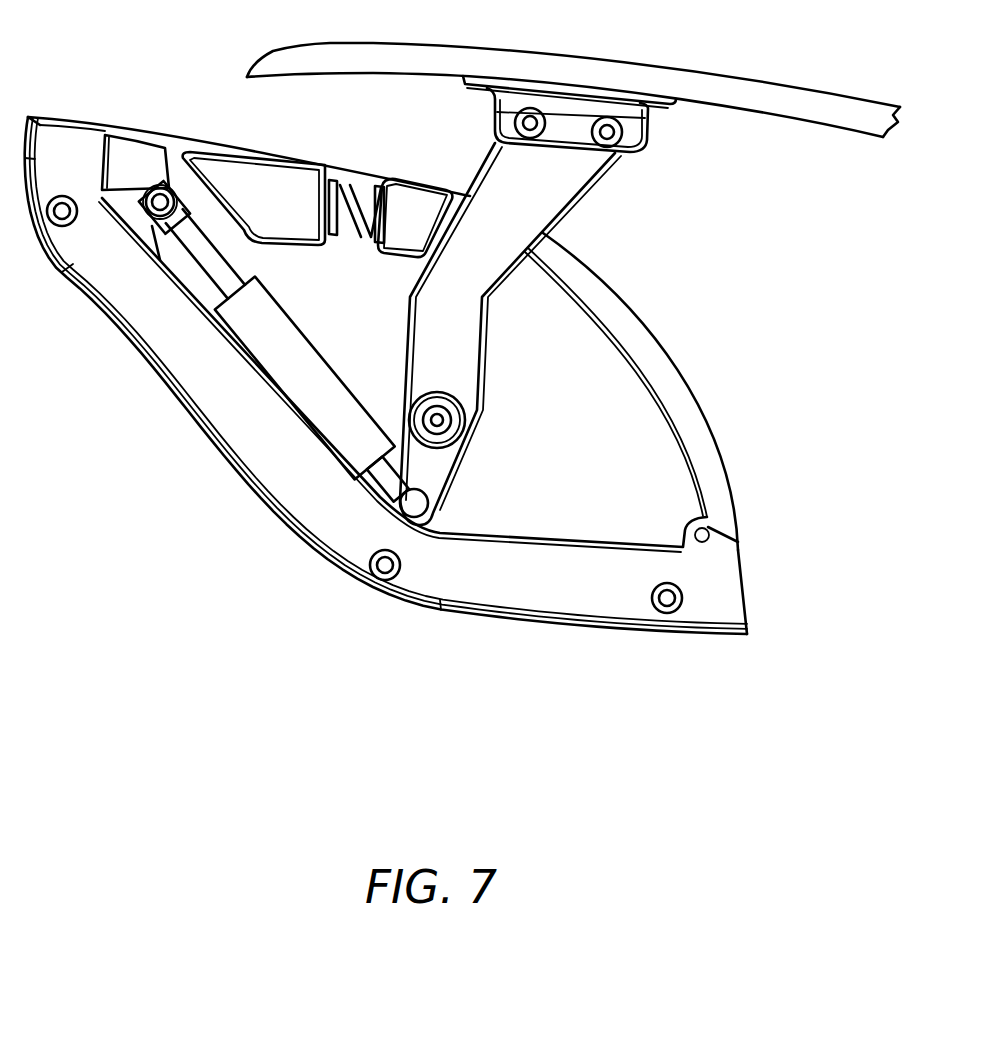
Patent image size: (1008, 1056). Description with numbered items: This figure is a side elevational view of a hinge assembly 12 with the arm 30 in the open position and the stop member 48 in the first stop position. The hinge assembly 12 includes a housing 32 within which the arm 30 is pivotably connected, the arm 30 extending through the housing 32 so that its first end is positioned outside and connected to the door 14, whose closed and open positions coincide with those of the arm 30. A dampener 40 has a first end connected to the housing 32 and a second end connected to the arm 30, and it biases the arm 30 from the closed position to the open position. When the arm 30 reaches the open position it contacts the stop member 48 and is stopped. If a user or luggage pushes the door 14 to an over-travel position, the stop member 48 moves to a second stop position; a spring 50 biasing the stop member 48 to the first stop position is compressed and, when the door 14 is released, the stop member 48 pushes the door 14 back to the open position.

The hinge assembly 12 is at (735, 228).
The door 14 is at (727, 83).
The arm 30 is at (490, 260).
The housing 32 is at (718, 503).
The dampener 40 is at (273, 347).
The stop member 48 is at (428, 185).
The spring 50 is at (348, 182).